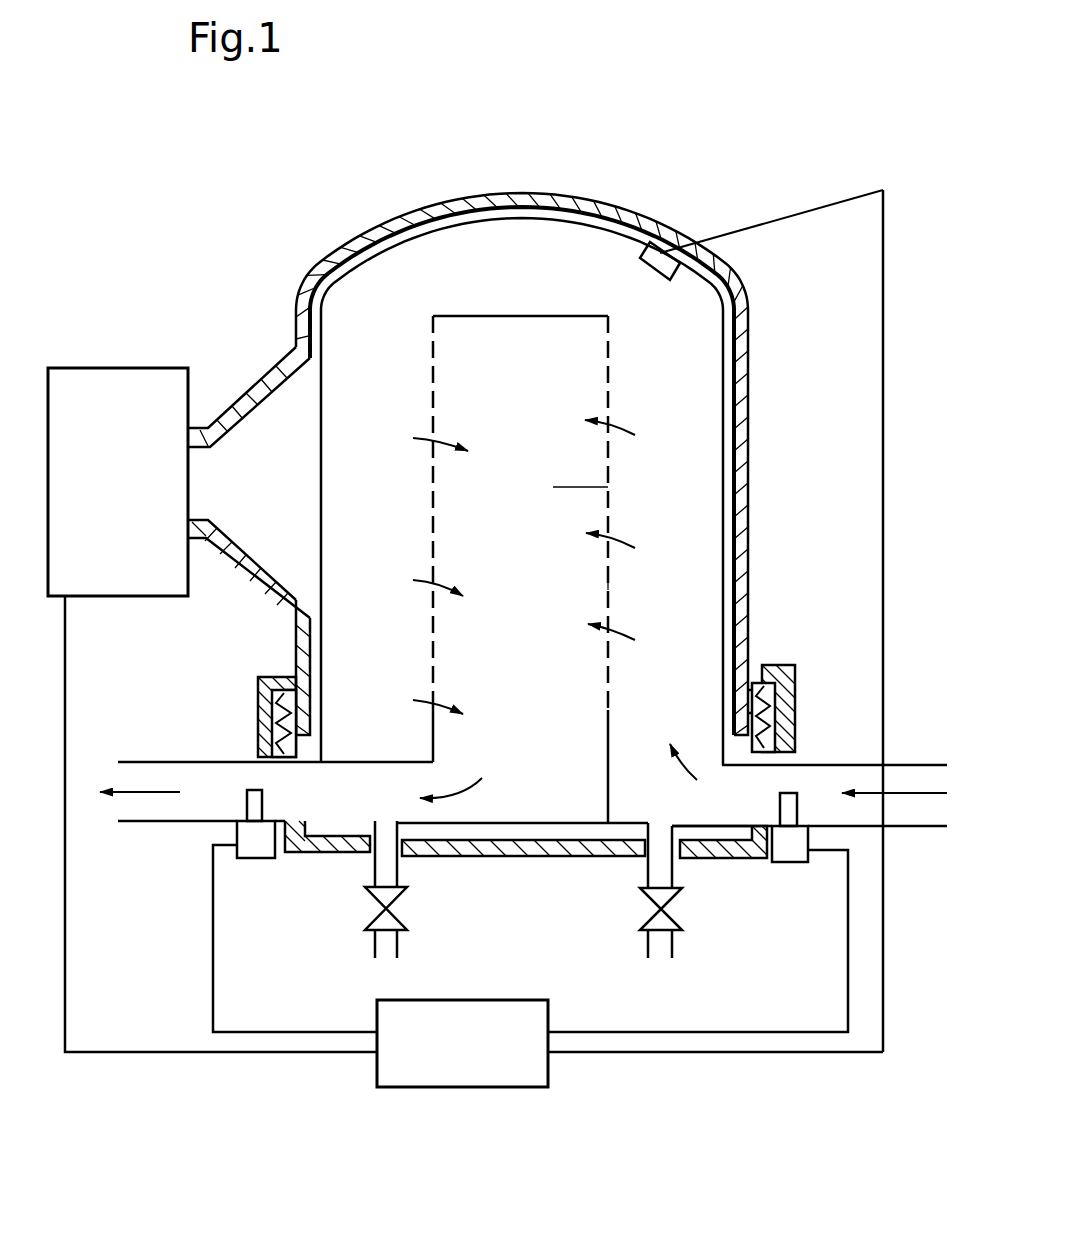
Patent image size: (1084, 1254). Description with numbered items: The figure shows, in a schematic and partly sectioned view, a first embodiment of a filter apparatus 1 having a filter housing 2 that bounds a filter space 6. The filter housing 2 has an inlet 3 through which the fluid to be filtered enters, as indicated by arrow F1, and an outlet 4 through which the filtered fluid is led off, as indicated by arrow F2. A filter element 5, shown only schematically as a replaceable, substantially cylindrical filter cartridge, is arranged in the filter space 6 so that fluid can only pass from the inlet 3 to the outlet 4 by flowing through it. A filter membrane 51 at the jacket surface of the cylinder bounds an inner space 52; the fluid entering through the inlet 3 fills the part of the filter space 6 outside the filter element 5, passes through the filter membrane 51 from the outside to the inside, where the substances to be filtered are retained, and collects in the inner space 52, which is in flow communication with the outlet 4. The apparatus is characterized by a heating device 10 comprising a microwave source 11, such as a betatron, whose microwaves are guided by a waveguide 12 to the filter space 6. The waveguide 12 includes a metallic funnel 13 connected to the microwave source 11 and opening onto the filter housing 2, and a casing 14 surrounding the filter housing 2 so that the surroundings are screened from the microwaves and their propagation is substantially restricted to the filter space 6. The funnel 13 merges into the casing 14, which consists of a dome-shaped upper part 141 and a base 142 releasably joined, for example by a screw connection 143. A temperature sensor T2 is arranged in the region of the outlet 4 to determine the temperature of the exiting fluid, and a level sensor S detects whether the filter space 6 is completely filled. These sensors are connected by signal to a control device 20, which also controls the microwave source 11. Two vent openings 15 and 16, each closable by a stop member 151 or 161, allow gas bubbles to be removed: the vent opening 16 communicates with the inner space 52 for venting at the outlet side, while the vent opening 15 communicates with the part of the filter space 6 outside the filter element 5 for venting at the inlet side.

The filter apparatus 1 is at (521, 70).
The filter housing 2 is at (436, 228).
The inlet 3 is at (828, 760).
The outlet 4 is at (157, 826).
The filter element 5 is at (521, 312).
The filter space 6 is at (389, 300).
The heating device 10 is at (147, 343).
The microwave source 11 is at (136, 480).
The waveguide 12 is at (299, 240).
The metallic funnel 13 is at (254, 388).
The casing 14 is at (627, 206).
The dome-shaped upper part 141 is at (748, 362).
The base 142 is at (515, 857).
The screw connection 143 is at (795, 690).
The vent opening 15 is at (673, 872).
The stop member 151 is at (680, 912).
The vent opening 16 is at (398, 867).
The stop member 161 is at (400, 916).
The control device 20 is at (486, 1060).
The filter membrane 51 is at (610, 583).
The inner space 52 is at (553, 487).
The level sensor S is at (680, 266).
The sensor T2 is at (258, 858).
The arrow F1 is at (918, 793).
The arrow F2 is at (139, 792).